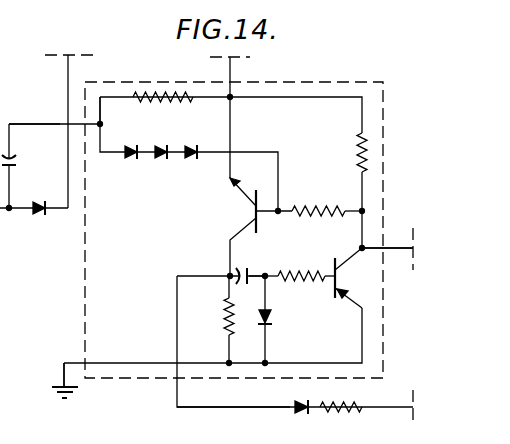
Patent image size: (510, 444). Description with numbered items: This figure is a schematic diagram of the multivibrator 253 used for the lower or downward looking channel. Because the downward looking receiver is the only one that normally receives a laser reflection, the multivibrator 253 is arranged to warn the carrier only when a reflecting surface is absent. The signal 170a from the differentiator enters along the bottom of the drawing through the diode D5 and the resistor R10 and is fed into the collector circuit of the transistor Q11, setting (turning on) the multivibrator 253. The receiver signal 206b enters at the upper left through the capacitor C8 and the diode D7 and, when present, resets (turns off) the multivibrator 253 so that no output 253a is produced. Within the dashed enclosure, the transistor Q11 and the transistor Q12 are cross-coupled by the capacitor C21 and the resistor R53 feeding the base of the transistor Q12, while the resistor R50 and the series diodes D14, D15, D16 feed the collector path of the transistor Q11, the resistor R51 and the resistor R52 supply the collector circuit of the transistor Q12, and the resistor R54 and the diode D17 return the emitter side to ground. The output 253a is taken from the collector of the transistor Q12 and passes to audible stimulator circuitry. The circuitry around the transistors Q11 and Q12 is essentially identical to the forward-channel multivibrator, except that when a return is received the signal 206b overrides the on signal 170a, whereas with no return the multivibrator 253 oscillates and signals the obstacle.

The multivibrator 253 is at (354, 80).
The output signal 253a is at (395, 246).
The receiver signal 206b is at (27, 113).
The differentiator signal 170a is at (216, 408).
The resistor R50 is at (160, 104).
The resistor R51 is at (356, 147).
The resistor R52 is at (308, 217).
The resistor R53 is at (305, 282).
The resistor R54 is at (224, 320).
The resistor R10 is at (328, 414).
The diode D5 is at (292, 409).
The diode D7 is at (36, 215).
The diode D14 is at (129, 160).
The diode D15 is at (161, 160).
The diode D16 is at (193, 160).
The diode D17 is at (272, 324).
The capacitor C8 is at (14, 163).
The capacitor C21 is at (243, 270).
The transistor Q11 is at (244, 195).
The transistor Q12 is at (343, 286).